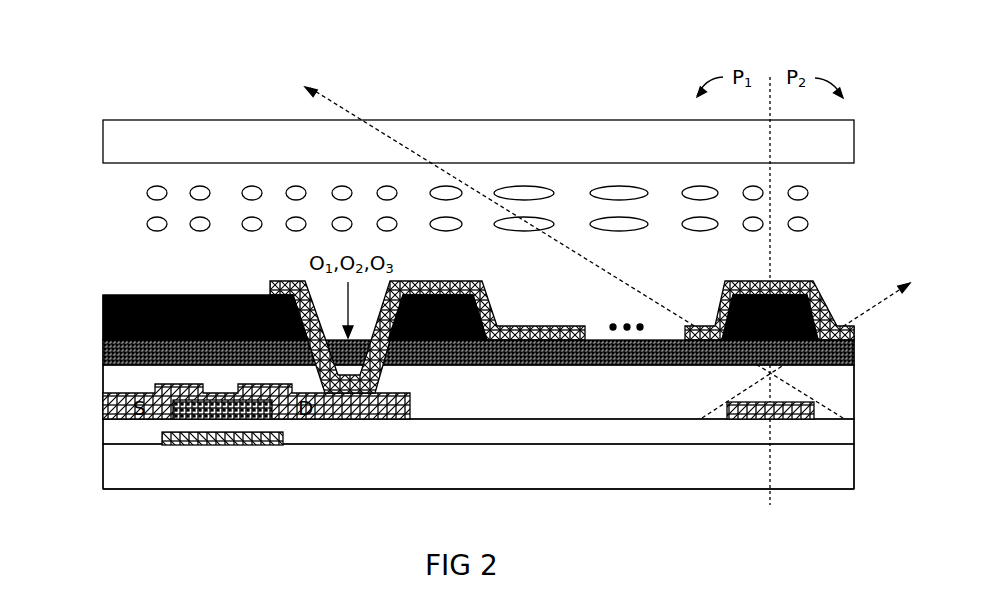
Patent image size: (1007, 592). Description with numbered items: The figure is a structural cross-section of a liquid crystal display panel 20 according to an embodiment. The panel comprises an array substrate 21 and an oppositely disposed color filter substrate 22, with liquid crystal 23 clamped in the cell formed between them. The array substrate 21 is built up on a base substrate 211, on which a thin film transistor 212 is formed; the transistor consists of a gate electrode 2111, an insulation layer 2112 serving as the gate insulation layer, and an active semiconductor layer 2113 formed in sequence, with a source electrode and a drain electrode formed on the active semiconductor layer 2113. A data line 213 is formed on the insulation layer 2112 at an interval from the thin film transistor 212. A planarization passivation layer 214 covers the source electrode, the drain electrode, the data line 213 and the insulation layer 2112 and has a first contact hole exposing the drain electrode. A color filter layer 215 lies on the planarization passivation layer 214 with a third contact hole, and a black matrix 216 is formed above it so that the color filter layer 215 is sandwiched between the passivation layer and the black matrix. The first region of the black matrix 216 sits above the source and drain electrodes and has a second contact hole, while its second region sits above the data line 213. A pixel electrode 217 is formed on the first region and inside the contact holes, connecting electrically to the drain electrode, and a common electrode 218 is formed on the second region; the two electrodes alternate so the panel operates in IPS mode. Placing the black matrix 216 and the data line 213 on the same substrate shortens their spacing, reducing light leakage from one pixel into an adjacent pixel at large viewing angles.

The liquid crystal display panel 20 is at (492, 63).
The array substrate 21 is at (872, 418).
The color filter substrate 22 is at (478, 141).
The liquid crystal 23 is at (150, 228).
The base substrate 211 is at (478, 466).
The thin film transistor 212 is at (145, 432).
The data line 213 is at (730, 405).
The planarization passivation layer 214 is at (478, 392).
The color filter layer 215 is at (103, 355).
The black matrix 216 is at (103, 310).
The pixel electrode 217 is at (272, 283).
The common electrode 218 is at (713, 292).
The gate electrode 2111 is at (240, 437).
The insulation layer 2112 is at (478, 431).
The active semiconductor layer 2113 is at (220, 412).